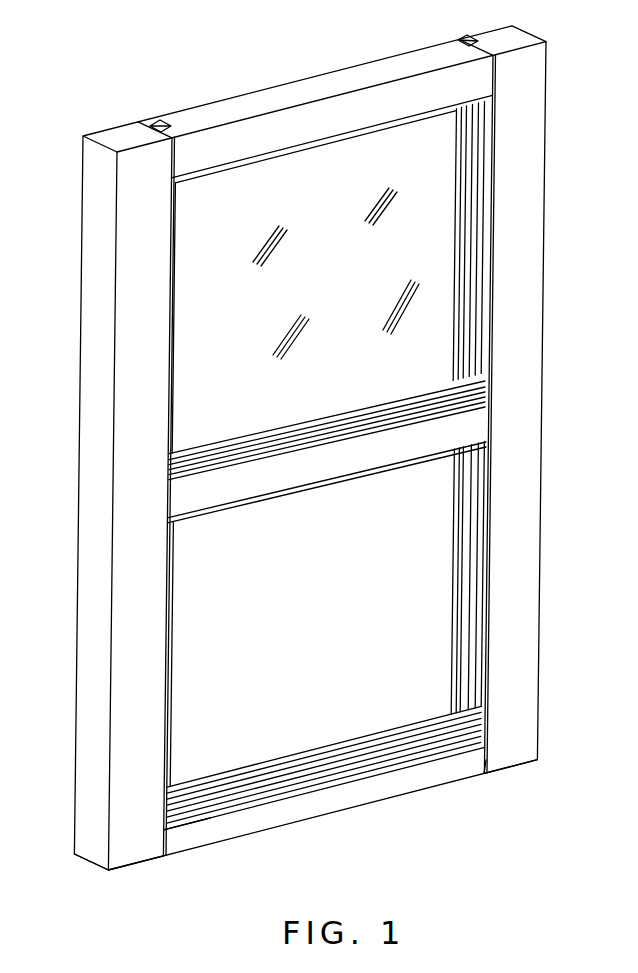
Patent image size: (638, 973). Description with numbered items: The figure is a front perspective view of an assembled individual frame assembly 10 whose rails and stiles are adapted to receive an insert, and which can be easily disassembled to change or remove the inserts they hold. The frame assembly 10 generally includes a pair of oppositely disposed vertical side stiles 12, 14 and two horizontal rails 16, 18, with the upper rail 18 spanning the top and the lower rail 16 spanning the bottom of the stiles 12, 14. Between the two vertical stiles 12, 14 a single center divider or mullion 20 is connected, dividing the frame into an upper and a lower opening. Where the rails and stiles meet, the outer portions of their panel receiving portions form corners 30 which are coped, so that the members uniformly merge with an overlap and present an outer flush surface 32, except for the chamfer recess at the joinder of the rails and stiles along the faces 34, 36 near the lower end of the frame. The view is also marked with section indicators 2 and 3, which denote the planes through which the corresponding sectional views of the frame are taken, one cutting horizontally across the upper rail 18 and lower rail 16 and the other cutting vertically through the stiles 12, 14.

The frame assembly 10 is at (554, 287).
The vertical side stile 12 is at (90, 346).
The vertical side stile 14 is at (527, 356).
The horizontal rail 16 is at (363, 793).
The horizontal rail 18 is at (382, 92).
The center divider or mullion 20 is at (372, 438).
The corners 30 is at (488, 422).
The outer flush surface 32 is at (480, 762).
The face 34 is at (137, 846).
The face 36 is at (200, 832).
The section line 2- 2 is at (258, 51).
The section line 3- 3 is at (565, 688).